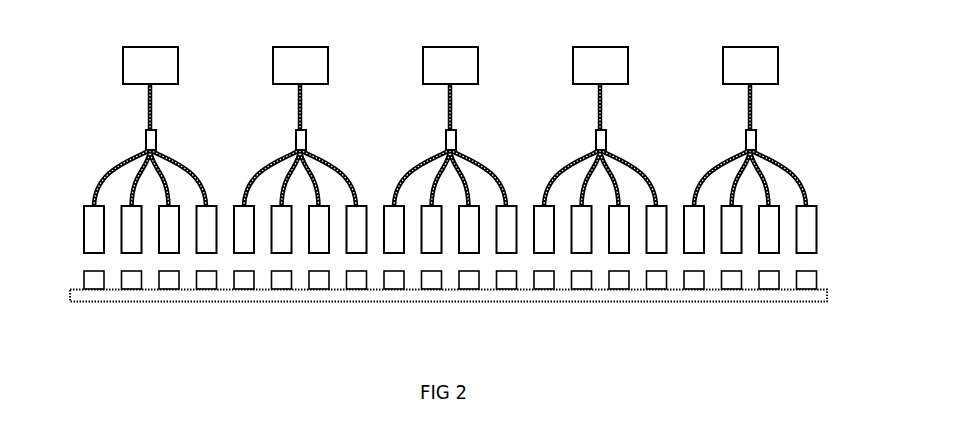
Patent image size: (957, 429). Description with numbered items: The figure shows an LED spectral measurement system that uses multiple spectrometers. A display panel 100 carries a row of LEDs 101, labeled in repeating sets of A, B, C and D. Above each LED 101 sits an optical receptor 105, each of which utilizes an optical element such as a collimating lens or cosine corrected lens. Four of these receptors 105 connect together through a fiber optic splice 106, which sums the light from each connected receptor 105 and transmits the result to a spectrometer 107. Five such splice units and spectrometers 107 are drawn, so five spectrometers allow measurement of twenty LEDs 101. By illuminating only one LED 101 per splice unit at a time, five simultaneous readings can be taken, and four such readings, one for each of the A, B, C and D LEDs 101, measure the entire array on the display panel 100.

The display panel 100 is at (829, 291).
The LEDs 101 is at (93, 289).
The optical receptors 105 is at (90, 235).
The fiber optic splice 106 is at (146, 138).
The spectrometer 107 is at (128, 64).